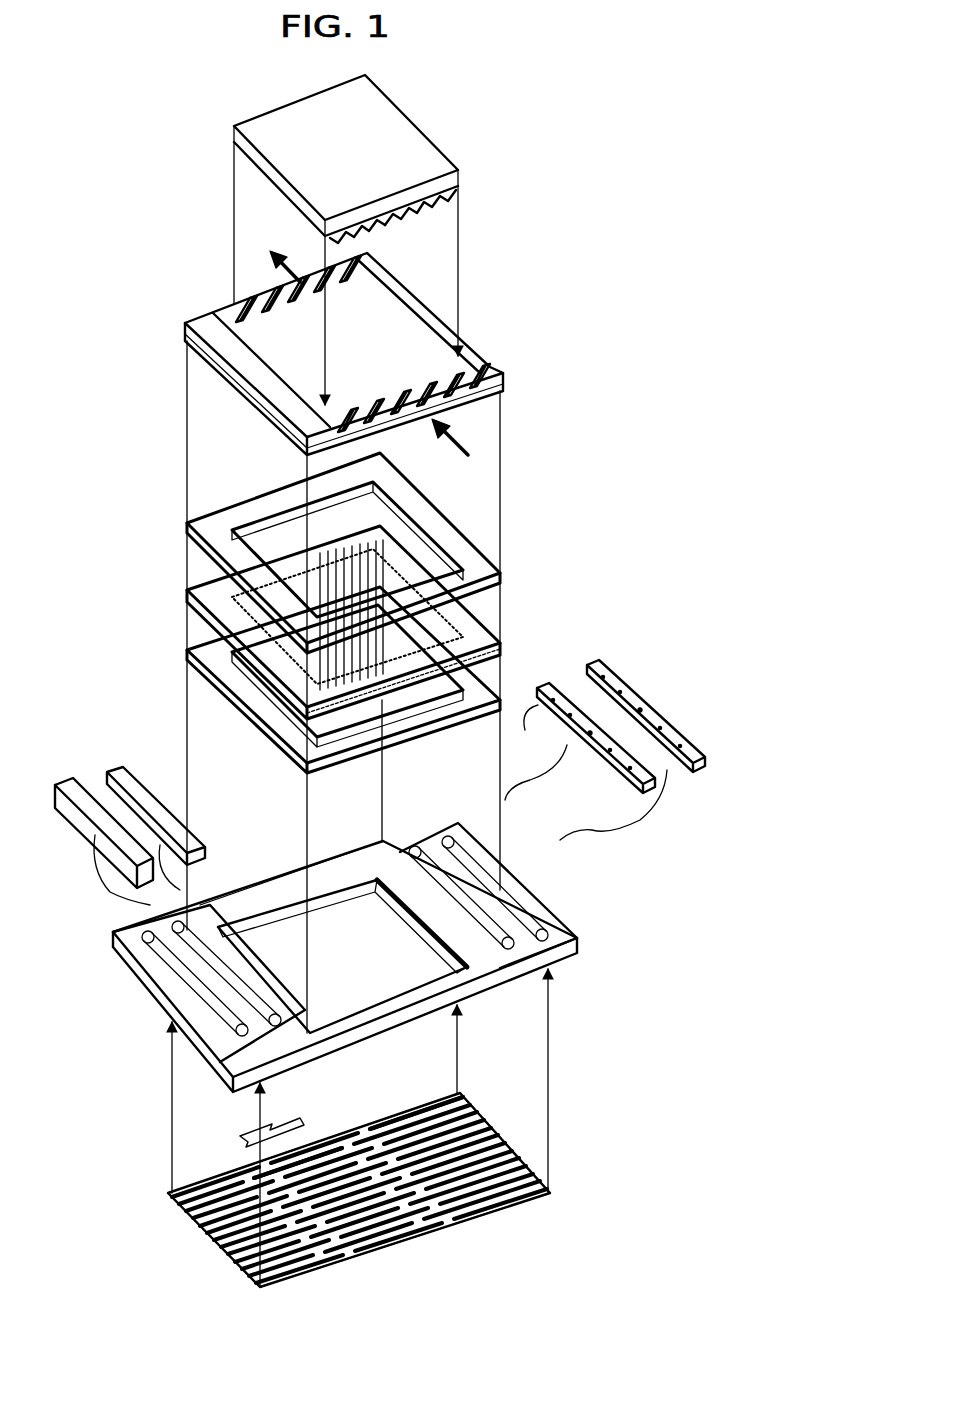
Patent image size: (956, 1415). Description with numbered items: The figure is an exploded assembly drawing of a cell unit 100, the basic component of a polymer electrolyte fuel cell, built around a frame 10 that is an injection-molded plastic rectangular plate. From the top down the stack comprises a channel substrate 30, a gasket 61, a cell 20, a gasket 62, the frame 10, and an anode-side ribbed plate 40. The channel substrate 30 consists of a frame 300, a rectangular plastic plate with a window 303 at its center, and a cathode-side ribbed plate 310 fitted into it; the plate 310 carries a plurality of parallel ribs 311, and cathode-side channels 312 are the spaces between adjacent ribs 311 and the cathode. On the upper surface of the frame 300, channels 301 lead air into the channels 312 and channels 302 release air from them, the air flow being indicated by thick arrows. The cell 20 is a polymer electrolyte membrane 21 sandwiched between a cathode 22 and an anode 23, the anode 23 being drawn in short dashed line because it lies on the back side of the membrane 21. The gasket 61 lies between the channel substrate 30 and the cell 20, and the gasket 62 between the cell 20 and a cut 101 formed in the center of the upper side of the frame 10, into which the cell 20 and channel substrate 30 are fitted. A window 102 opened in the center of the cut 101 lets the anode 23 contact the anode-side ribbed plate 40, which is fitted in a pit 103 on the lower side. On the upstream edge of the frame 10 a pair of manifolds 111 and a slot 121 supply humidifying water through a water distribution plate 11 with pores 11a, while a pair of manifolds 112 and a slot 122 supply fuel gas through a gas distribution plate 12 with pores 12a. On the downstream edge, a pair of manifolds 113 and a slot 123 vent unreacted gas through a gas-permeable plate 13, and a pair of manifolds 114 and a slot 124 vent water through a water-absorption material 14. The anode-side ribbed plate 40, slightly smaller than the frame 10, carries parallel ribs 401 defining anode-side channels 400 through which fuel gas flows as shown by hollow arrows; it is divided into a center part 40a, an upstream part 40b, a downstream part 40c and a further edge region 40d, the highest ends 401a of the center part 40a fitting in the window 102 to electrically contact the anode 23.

The cell unit 100 is at (660, 348).
The channel substrate 30 is at (538, 208).
The cathode-side ribbed plate 310 is at (465, 186).
The ribs 311 is at (372, 226).
The cathode-side channels 312 is at (378, 237).
The frame 300 is at (472, 338).
The channels 301 is at (420, 390).
The channels 302 is at (306, 300).
The window 303 is at (343, 352).
The gasket 61 is at (475, 526).
The cell 20 is at (555, 520).
The polymer electrolyte membrane 21 is at (482, 594).
The cathode 22 is at (480, 573).
The anode 23 is at (486, 616).
The gasket 62 is at (484, 686).
The gas distribution plate 12 is at (566, 680).
The gas hole 12a is at (572, 716).
The water distribution plate 11 is at (692, 748).
The pores 11a is at (640, 680).
The gas-permeable plate 13 is at (132, 775).
The water-absorption material 14 is at (80, 786).
The frame 10 is at (518, 872).
The cut 101 is at (245, 878).
The window 102 is at (330, 878).
The pit 103 is at (415, 940).
The manifolds 111 is at (450, 835).
The manifolds 112 is at (416, 845).
The manifolds 113 is at (190, 900).
The manifolds 114 is at (128, 934).
The slot 121 is at (498, 832).
The slot 122 is at (528, 882).
The slot 123 is at (290, 990).
The slot 124 is at (178, 1006).
The anode-side ribbed plate 40 is at (482, 1102).
The anode-side channels 400 is at (388, 1255).
The ribs 401 is at (430, 1098).
The highest ends 401a is at (350, 1125).
The center part 40a is at (372, 1254).
The upstream part 40b is at (480, 1216).
The downstream part 40c is at (290, 1278).
The collector rear edge 40d is at (168, 1168).